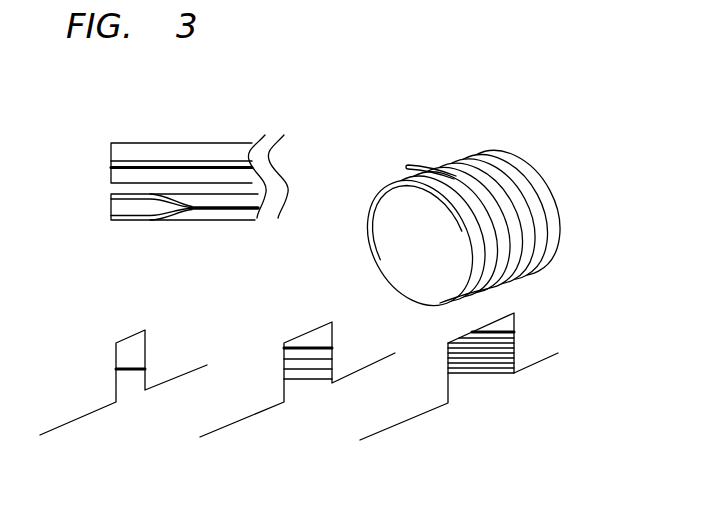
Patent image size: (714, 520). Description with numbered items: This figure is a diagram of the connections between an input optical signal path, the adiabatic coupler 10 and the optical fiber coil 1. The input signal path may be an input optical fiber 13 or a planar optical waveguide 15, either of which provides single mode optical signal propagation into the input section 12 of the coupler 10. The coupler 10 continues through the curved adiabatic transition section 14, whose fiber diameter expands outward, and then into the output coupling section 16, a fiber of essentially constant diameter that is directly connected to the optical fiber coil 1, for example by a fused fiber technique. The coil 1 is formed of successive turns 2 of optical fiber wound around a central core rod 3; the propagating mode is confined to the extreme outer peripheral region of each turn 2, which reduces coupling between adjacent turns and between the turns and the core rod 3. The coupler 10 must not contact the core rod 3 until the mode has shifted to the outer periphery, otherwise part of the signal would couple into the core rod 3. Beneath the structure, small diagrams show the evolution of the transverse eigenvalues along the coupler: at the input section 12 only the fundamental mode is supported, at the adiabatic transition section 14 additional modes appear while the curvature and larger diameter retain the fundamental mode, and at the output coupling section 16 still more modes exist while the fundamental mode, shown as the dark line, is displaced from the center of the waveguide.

The optical fiber coil 1 is at (540, 192).
The turn 2 is at (530, 243).
The central core rod 3 is at (470, 212).
The adiabatic coupler 10 is at (441, 107).
The input section 12 is at (203, 265).
The optical fiber 13 is at (132, 212).
The adiabatic transition section 14 is at (490, 205).
The waveguide 15 is at (172, 156).
The output coupling section 16 is at (483, 288).